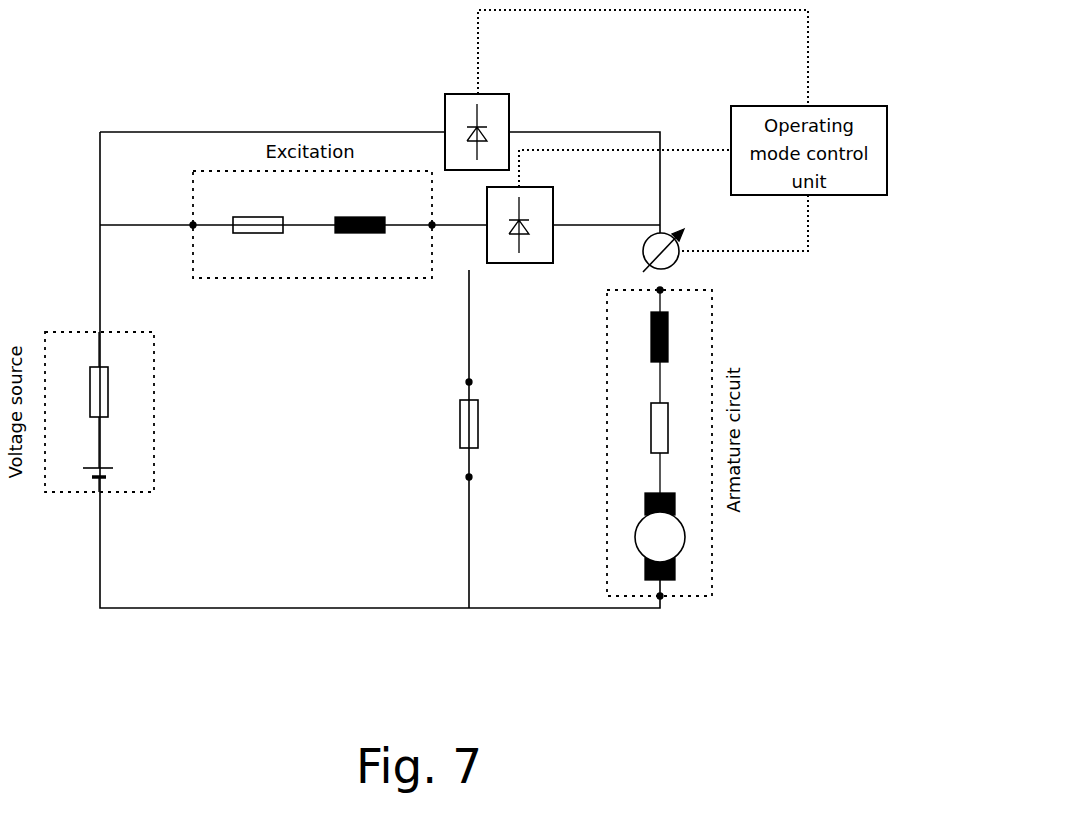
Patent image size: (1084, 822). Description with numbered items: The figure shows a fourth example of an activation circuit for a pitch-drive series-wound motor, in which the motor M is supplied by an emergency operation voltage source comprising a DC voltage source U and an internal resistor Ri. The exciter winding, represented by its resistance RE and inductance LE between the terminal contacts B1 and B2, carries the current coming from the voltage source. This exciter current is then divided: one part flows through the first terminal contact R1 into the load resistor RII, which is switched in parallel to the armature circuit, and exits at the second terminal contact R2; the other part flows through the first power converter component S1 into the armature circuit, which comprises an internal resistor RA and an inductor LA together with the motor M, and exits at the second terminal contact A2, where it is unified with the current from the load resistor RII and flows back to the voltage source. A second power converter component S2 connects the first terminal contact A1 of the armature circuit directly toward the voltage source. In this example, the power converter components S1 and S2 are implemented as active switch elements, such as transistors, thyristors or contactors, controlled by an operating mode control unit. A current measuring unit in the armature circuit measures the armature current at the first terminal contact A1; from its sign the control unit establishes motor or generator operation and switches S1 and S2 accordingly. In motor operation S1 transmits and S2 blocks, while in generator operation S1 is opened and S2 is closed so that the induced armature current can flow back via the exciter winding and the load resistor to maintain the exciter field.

The excitation terminal B1 is at (193, 225).
The excitation terminal B2 is at (432, 225).
The first power converter component S1 is at (553, 205).
The second power converter component S2 is at (504, 94).
The excitation winding resistance RE is at (258, 245).
The excitation winding inductance LE is at (360, 245).
The internal resistor Ri is at (81, 400).
The DC voltage source U is at (81, 472).
The first terminal contact of the load resistor R1 is at (469, 382).
The second terminal contact of the load resistor R2 is at (469, 477).
The load resistor RII is at (446, 424).
The first terminal contact of the armature circuit A1 is at (660, 290).
The second terminal contact of the armature winding A2 is at (660, 596).
The inductor LA is at (673, 346).
The internal resistor RA is at (675, 448).
The motor M is at (660, 536).